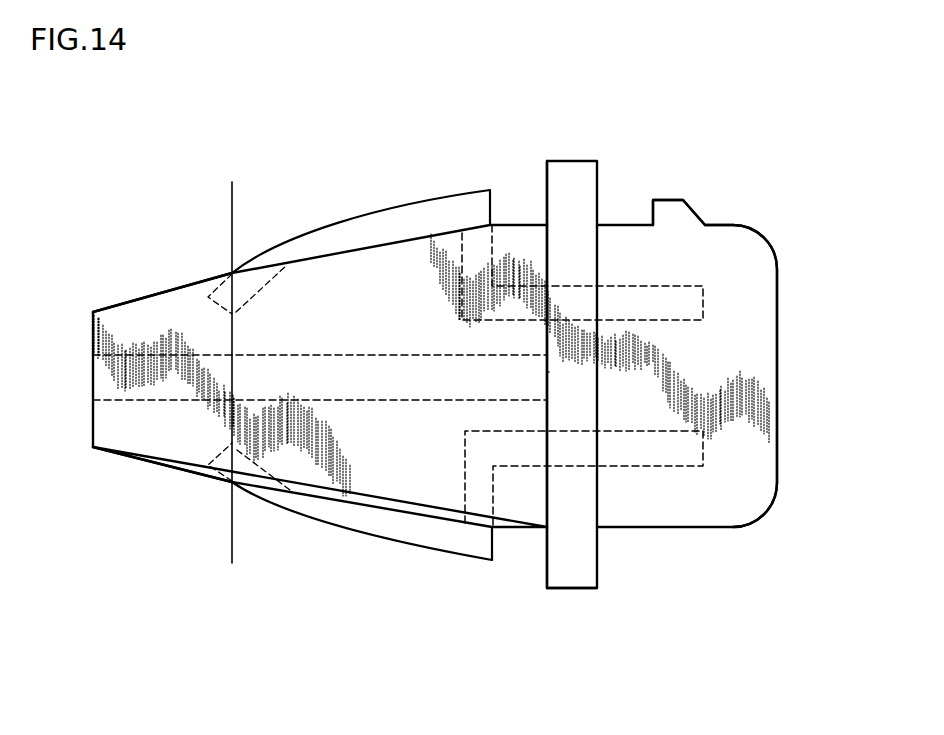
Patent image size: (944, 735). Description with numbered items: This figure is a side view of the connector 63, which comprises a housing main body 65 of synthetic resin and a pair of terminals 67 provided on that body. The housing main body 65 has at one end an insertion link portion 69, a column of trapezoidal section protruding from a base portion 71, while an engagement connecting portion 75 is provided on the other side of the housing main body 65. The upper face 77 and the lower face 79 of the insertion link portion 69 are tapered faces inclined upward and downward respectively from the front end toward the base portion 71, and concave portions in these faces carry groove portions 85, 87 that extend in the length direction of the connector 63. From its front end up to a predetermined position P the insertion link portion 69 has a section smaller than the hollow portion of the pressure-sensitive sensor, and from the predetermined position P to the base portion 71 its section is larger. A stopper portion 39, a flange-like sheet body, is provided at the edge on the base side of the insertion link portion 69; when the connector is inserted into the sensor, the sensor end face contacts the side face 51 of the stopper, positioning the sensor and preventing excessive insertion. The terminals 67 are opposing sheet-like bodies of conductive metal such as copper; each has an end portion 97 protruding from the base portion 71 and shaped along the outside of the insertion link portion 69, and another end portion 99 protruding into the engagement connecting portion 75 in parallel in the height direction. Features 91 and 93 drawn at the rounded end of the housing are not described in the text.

The predetermined position P is at (236, 172).
The stopper portion 39 is at (575, 590).
The side face 51 is at (547, 570).
The connector 63 is at (136, 180).
The housing main body 65 is at (572, 150).
The terminals 67 is at (392, 196).
The insertion link portion 69 is at (110, 430).
The base portion 71 is at (536, 373).
The engagement connecting portion 75 is at (743, 435).
The upper face 77 is at (126, 297).
The lower face 79 is at (118, 456).
The groove portion 85 is at (247, 327).
The groove portion 87 is at (198, 430).
The head portion 91 is at (730, 222).
The shoulder portion 93 is at (685, 200).
The end portion 97 is at (312, 240).
The other end portion 99 is at (623, 285).